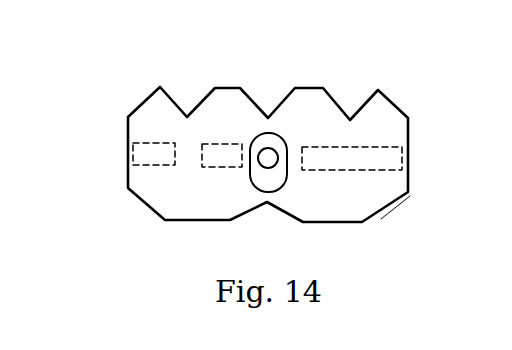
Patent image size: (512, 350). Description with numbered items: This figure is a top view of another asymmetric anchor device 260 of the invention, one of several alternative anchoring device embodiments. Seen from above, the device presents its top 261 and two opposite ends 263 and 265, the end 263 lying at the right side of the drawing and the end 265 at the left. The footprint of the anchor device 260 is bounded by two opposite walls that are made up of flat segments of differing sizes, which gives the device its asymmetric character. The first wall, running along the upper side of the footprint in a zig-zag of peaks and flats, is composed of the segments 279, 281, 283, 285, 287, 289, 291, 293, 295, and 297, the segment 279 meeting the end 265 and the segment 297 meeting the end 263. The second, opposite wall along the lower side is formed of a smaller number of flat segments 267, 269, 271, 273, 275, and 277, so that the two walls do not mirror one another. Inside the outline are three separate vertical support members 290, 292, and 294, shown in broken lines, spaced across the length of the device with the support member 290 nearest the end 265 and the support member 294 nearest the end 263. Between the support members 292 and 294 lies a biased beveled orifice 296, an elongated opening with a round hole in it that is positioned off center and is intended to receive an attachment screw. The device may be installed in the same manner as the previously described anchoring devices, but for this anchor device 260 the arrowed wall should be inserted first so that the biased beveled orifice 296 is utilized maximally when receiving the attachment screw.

The anchor device 260 is at (422, 133).
The top 261 is at (412, 190).
The end 263 is at (411, 152).
The end 265 is at (127, 170).
The flat segment 267 is at (393, 213).
The flat segment 269 is at (358, 223).
The flat segment 271 is at (301, 224).
The flat segment 273 is at (233, 222).
The flat segment 275 is at (178, 222).
The flat segment 277 is at (134, 196).
The segment 279 is at (146, 98).
The segment 281 is at (176, 78).
The segment 283 is at (210, 92).
The segment 285 is at (237, 88).
The segment 287 is at (250, 99).
The segment 289 is at (293, 87).
The vertical support member 290 is at (127, 135).
The segment 291 is at (332, 99).
The vertical support member 292 is at (224, 161).
The segment 293 is at (368, 98).
The vertical support member 294 is at (312, 166).
The segment 295 is at (383, 92).
The biased beveled orifice 296 is at (285, 140).
The segment 297 is at (399, 108).